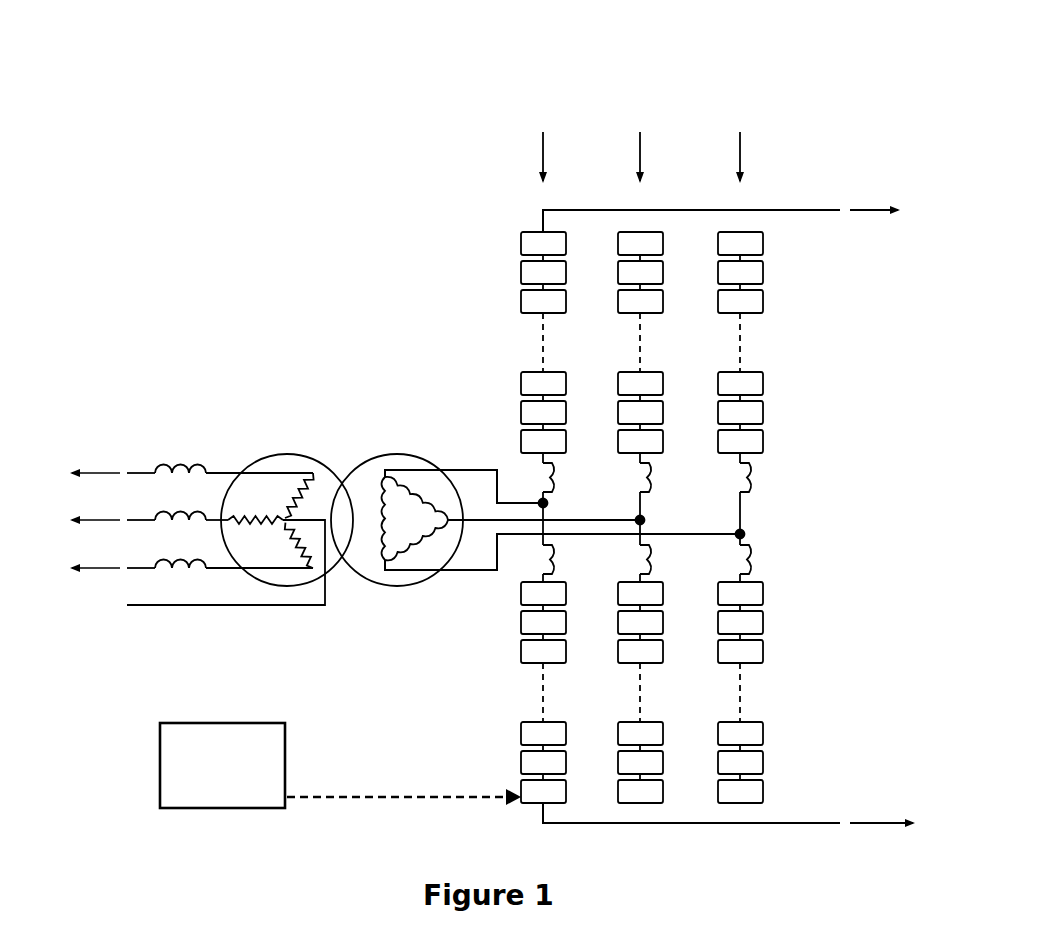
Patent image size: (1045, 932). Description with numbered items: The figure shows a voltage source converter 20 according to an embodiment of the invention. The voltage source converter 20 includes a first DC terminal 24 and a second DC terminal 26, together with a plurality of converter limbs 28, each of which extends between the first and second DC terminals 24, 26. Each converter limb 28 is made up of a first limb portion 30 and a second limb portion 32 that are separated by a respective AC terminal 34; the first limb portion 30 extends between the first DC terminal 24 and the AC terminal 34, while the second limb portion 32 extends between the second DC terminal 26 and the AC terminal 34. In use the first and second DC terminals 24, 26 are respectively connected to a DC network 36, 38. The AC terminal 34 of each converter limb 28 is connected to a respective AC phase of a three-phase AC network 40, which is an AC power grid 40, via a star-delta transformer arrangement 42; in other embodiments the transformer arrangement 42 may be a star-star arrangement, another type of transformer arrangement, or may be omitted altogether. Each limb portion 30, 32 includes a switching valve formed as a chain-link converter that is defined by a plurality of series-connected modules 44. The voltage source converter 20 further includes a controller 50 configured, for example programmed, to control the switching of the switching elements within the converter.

The voltage source converter 20 is at (823, 128).
The first DC terminal 24 is at (748, 215).
The second DC terminal 26 is at (745, 818).
The converter limb 28 is at (642, 140).
The first limb portion 30 is at (800, 366).
The second limb portion 32 is at (780, 658).
The AC terminal 34 is at (546, 501).
The DC network 36 is at (892, 211).
The DC network 38 is at (900, 826).
The three-phase AC network 40 is at (173, 514).
The star-delta transformer arrangement 42 is at (343, 573).
The series-connected module 44 is at (527, 272).
The controller 50 is at (340, 765).